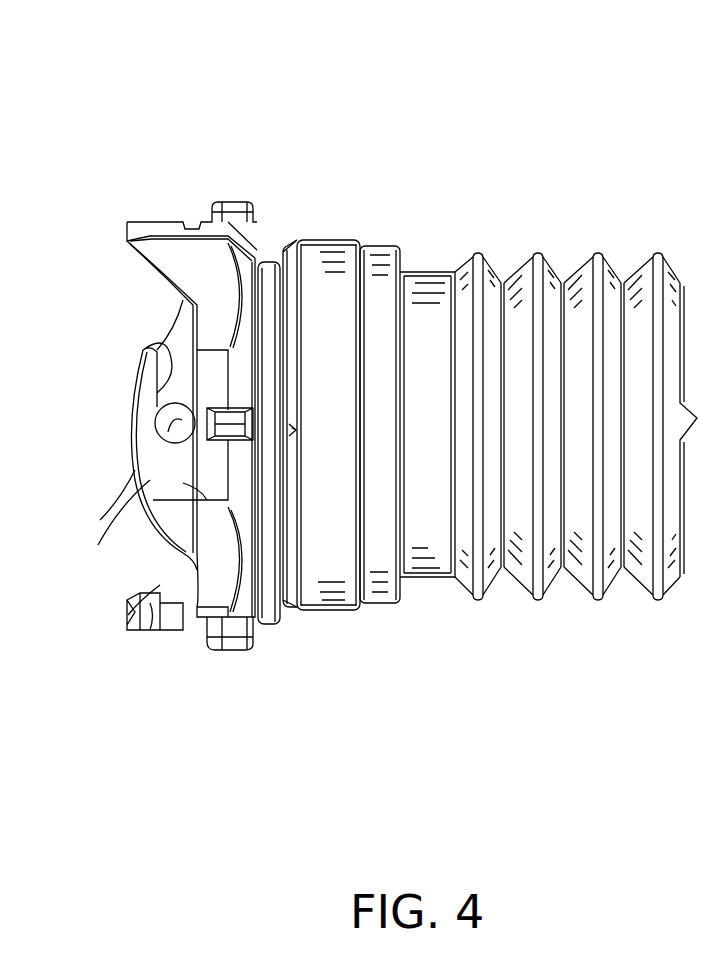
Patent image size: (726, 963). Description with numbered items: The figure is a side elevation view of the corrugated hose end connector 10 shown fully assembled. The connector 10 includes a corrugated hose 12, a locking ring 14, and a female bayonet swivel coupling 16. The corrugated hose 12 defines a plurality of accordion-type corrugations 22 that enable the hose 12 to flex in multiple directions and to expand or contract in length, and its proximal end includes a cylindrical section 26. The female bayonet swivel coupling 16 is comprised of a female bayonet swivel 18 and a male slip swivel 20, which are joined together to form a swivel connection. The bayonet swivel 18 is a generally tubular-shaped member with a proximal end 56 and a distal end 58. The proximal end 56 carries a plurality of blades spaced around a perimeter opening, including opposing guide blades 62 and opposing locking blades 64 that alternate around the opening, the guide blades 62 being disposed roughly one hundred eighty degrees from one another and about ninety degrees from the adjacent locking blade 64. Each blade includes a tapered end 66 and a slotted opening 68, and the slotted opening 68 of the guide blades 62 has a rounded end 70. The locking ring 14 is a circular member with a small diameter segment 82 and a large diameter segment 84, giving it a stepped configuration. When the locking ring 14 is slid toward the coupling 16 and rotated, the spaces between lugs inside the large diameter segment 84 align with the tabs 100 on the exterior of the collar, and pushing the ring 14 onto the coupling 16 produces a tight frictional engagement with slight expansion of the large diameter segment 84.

The corrugated hose end connector 10 is at (493, 50).
The corrugated hose 12 is at (584, 153).
The locking ring 14 is at (380, 172).
The female bayonet swivel coupling 16 is at (188, 128).
The female bayonet swivel 18 is at (92, 238).
The male slip swivel 20 is at (278, 242).
The accordion-type corrugations 22 is at (598, 253).
The cylindrical section 26 is at (430, 545).
The proximal end 56 is at (170, 283).
The distal end 58 is at (272, 592).
The guide blade 62 is at (205, 627).
The locking blade 64 is at (170, 585).
The tapered end 66 is at (140, 630).
The slotted opening 68 is at (167, 367).
The rounded end 70 is at (170, 443).
The small diameter segment 82 is at (378, 580).
The large diameter segment 84 is at (320, 587).
The tab 100 is at (298, 432).